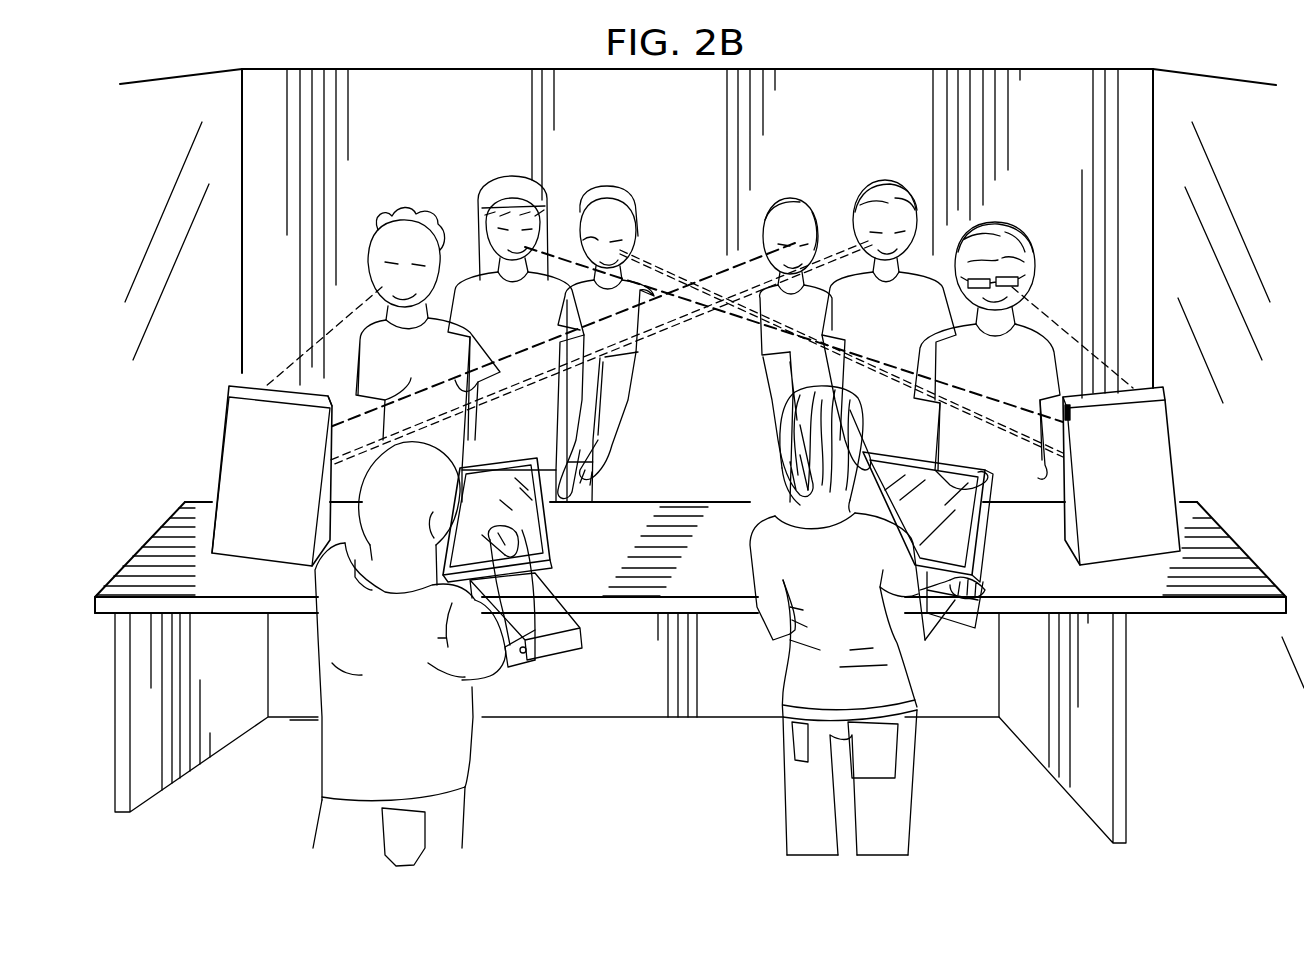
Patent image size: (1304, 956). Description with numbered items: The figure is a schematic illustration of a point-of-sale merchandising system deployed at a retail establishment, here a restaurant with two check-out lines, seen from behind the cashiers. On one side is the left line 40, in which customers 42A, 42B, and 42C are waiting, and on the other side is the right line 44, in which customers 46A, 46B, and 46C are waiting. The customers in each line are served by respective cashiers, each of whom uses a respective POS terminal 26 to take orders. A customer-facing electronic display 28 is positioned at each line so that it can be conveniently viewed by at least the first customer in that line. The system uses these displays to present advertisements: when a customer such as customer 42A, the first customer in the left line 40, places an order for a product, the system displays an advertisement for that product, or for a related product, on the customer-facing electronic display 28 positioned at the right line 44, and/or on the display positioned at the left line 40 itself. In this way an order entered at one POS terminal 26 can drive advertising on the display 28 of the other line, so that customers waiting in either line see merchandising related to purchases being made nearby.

The POS terminal 26 is at (530, 518).
The customer-facing electronic display 28 is at (232, 463).
The left line 40 is at (1030, 185).
The customer 42A is at (1010, 230).
The customer 42B is at (883, 192).
The customer 42C is at (790, 198).
The right line 44 is at (410, 156).
The customer 46A is at (405, 220).
The customer 46B is at (516, 339).
The customer 46C is at (600, 198).